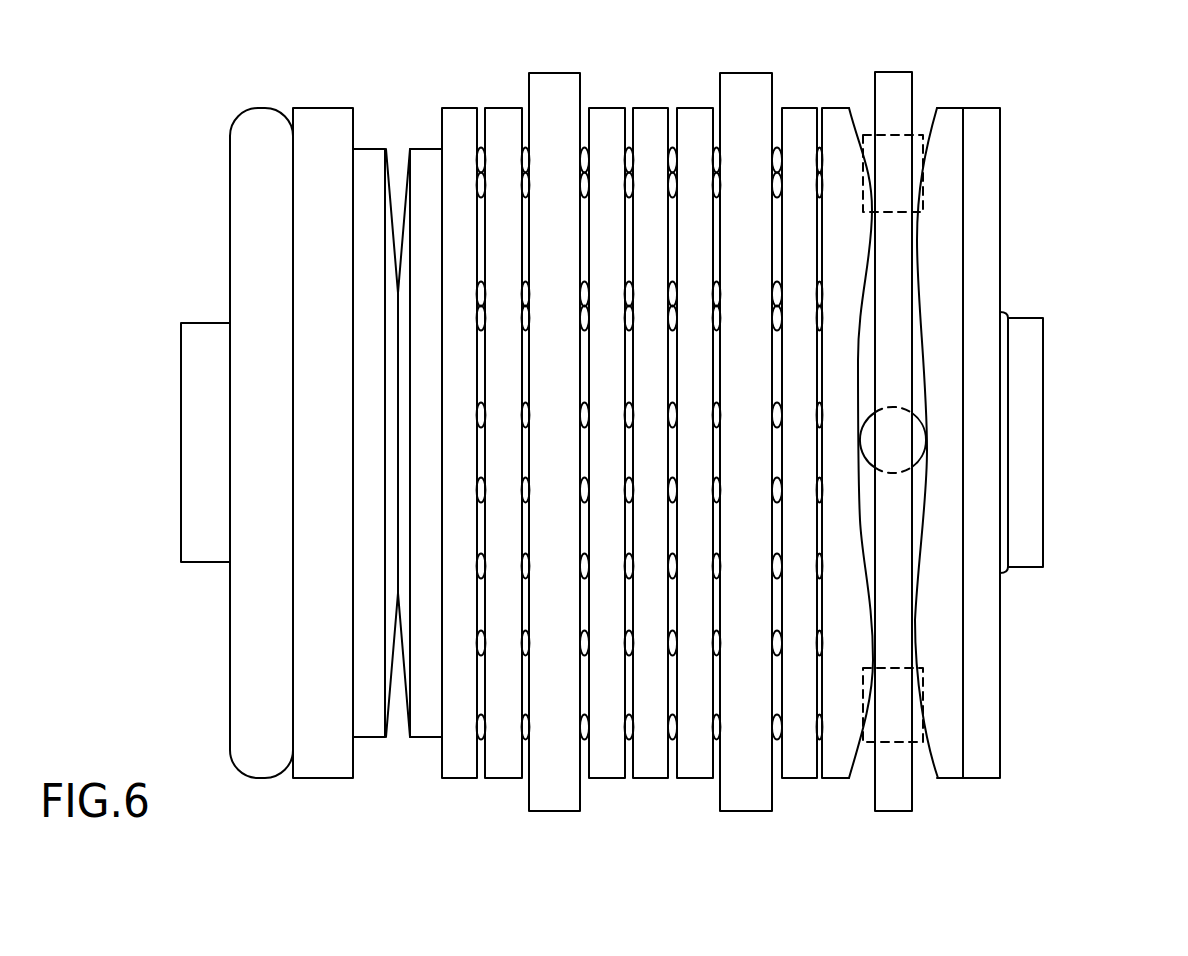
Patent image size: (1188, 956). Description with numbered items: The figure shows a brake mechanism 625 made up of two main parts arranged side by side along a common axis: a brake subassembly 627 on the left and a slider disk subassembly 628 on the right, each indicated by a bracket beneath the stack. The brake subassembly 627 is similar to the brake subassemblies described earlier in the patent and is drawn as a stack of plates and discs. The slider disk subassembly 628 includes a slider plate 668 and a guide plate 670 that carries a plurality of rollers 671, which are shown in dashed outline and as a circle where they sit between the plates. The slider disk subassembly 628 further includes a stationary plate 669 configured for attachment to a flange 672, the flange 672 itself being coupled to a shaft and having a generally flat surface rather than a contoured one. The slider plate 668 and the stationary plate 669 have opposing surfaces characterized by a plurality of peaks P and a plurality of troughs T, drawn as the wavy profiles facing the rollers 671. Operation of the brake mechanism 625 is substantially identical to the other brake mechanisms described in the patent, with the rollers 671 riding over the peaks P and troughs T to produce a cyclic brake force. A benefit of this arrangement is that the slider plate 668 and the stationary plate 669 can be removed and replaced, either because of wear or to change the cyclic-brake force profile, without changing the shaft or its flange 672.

The brake mechanism 625 is at (239, 80).
The brake subassembly 627 is at (230, 772).
The slider disk subassembly 628 is at (822, 785).
The slider plate 668 is at (838, 118).
The stationary plate 669 is at (943, 295).
The guide plate 670 is at (900, 87).
The rollers 671 is at (923, 180).
The flange 672 is at (985, 248).
The peaks P is at (872, 233).
The troughs T is at (928, 367).